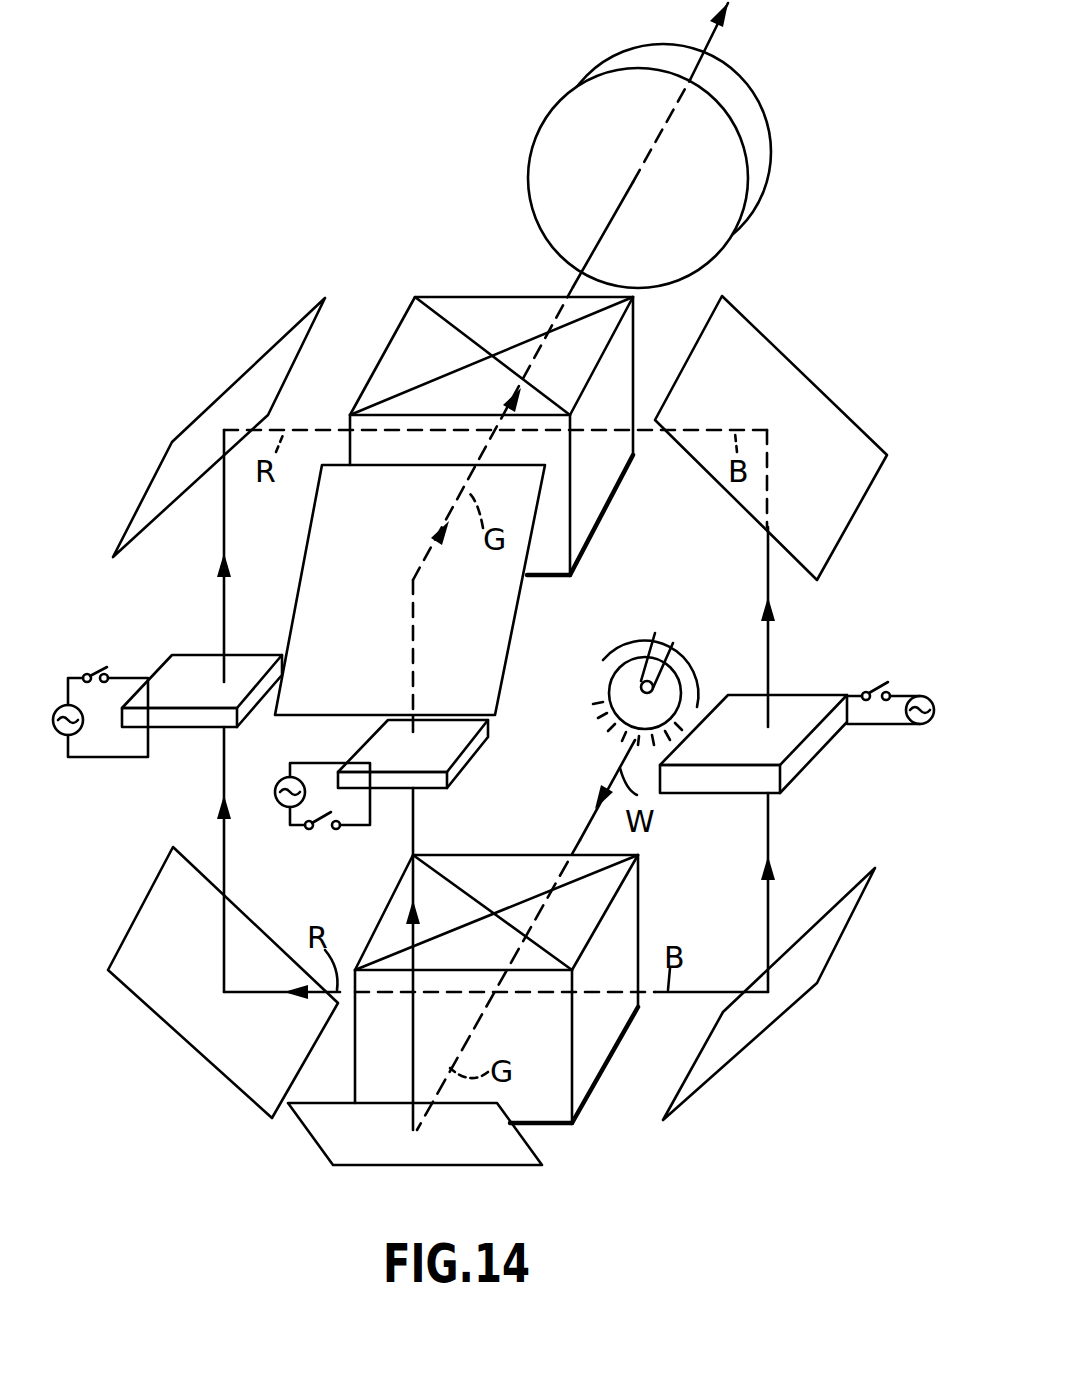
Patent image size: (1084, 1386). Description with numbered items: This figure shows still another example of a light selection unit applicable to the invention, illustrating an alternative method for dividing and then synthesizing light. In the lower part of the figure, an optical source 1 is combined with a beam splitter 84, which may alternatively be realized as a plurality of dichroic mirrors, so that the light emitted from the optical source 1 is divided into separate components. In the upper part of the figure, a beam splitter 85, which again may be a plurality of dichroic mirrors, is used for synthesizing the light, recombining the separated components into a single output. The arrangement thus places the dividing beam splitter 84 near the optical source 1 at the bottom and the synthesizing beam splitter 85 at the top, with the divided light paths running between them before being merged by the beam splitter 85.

The beam splitter 85 is at (453, 303).
The beam splitter 84 is at (590, 1082).
The optical source 1 is at (693, 672).